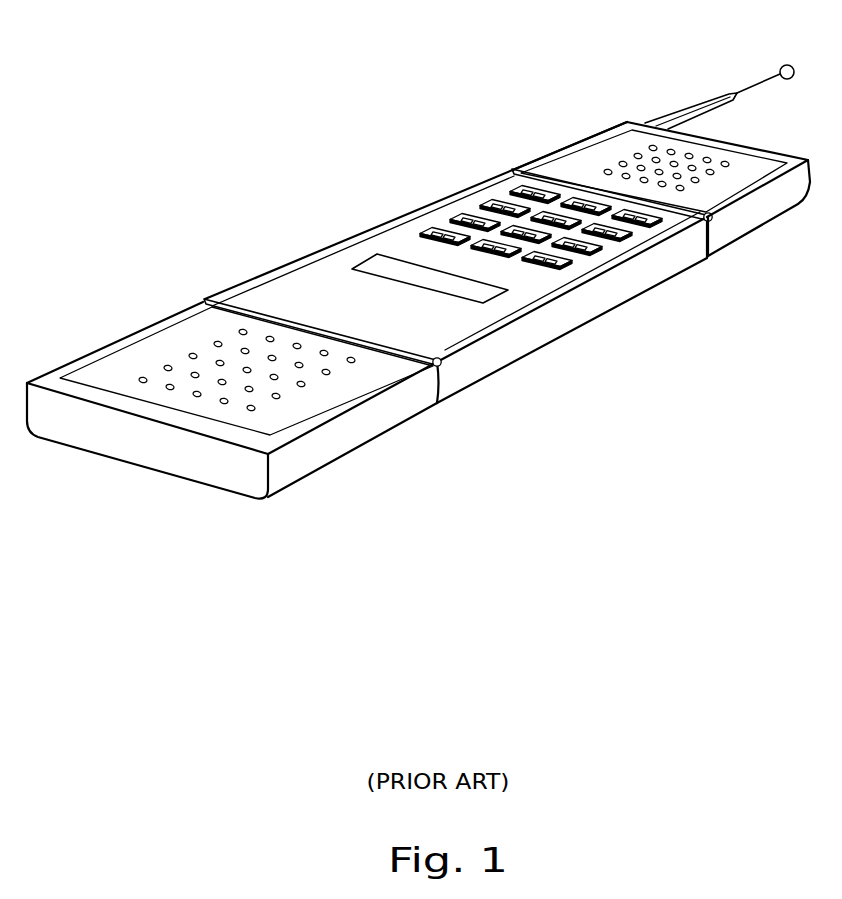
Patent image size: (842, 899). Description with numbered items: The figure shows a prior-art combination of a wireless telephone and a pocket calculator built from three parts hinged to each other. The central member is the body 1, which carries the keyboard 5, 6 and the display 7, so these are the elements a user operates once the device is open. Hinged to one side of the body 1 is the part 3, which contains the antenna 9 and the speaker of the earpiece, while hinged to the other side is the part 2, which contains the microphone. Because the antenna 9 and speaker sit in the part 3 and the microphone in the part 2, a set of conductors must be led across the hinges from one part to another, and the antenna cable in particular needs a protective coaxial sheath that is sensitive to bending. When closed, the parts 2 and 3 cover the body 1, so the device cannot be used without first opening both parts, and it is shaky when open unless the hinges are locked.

The body 1 is at (537, 331).
The part 2 is at (344, 442).
The part 3 is at (743, 213).
The keyboard 5 is at (472, 187).
The keyboard 6 is at (264, 273).
The display 7 is at (353, 268).
The antenna 9 is at (710, 93).